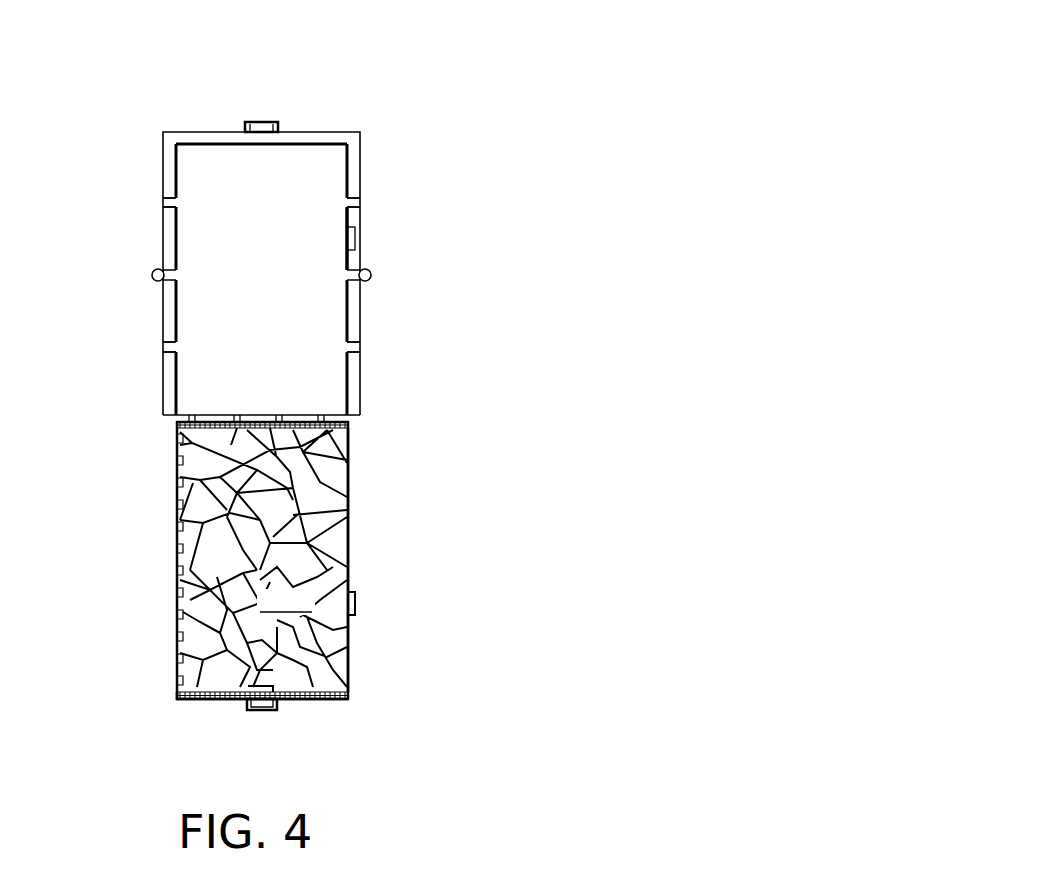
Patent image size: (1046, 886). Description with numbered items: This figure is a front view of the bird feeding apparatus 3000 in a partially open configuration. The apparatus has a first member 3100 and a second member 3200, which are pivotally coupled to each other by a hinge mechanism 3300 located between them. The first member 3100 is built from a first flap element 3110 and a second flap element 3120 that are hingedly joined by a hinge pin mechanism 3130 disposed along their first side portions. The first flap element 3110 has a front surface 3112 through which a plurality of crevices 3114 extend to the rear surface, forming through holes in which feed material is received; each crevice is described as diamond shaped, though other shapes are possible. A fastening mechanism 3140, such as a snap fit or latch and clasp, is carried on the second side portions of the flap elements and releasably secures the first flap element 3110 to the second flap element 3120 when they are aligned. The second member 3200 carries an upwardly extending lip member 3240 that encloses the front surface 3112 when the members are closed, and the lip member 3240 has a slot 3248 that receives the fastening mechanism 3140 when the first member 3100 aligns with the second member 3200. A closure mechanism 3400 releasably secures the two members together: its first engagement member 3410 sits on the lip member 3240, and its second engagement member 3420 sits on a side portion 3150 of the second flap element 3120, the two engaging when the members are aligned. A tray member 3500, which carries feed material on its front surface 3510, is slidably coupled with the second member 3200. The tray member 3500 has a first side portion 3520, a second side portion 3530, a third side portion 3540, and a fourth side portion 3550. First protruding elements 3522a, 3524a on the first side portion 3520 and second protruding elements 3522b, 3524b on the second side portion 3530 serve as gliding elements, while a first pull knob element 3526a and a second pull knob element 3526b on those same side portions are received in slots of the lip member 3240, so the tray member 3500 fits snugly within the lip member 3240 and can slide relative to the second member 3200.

The bird feeding apparatus 3000 is at (692, 82).
The second member 3200 is at (368, 128).
The third side portion 3540 is at (218, 142).
The first side portion 3520 is at (166, 378).
The second side portion 3530 is at (361, 300).
The tray member 3500 is at (358, 370).
The first protruding element 3522a is at (166, 203).
The second protruding element 3522b is at (360, 203).
The first protruding element 3524a is at (166, 347).
The second protruding element 3524b is at (361, 346).
The first pull knob element 3526a is at (152, 277).
The second pull knob element 3526b is at (371, 276).
The lip member 3240 is at (372, 229).
The slot 3248 is at (356, 240).
The front surface 3510 is at (292, 322).
The first engagement member 3410 is at (262, 121).
The fourth side portion 3550 is at (178, 444).
The hinge mechanism 3300 is at (350, 432).
The first member 3100 is at (370, 541).
The first flap element 3110 is at (350, 473).
The second flap element 3120 is at (178, 697).
The front surface 3112 is at (312, 612).
The hinge pin mechanism 3130 is at (180, 540).
The plurality of crevices 3114 is at (193, 578).
The fastening mechanism 3140 is at (356, 600).
The side portion 3150 is at (345, 702).
The closure mechanism 3400 is at (240, 722).
The second engagement member 3420 is at (263, 711).